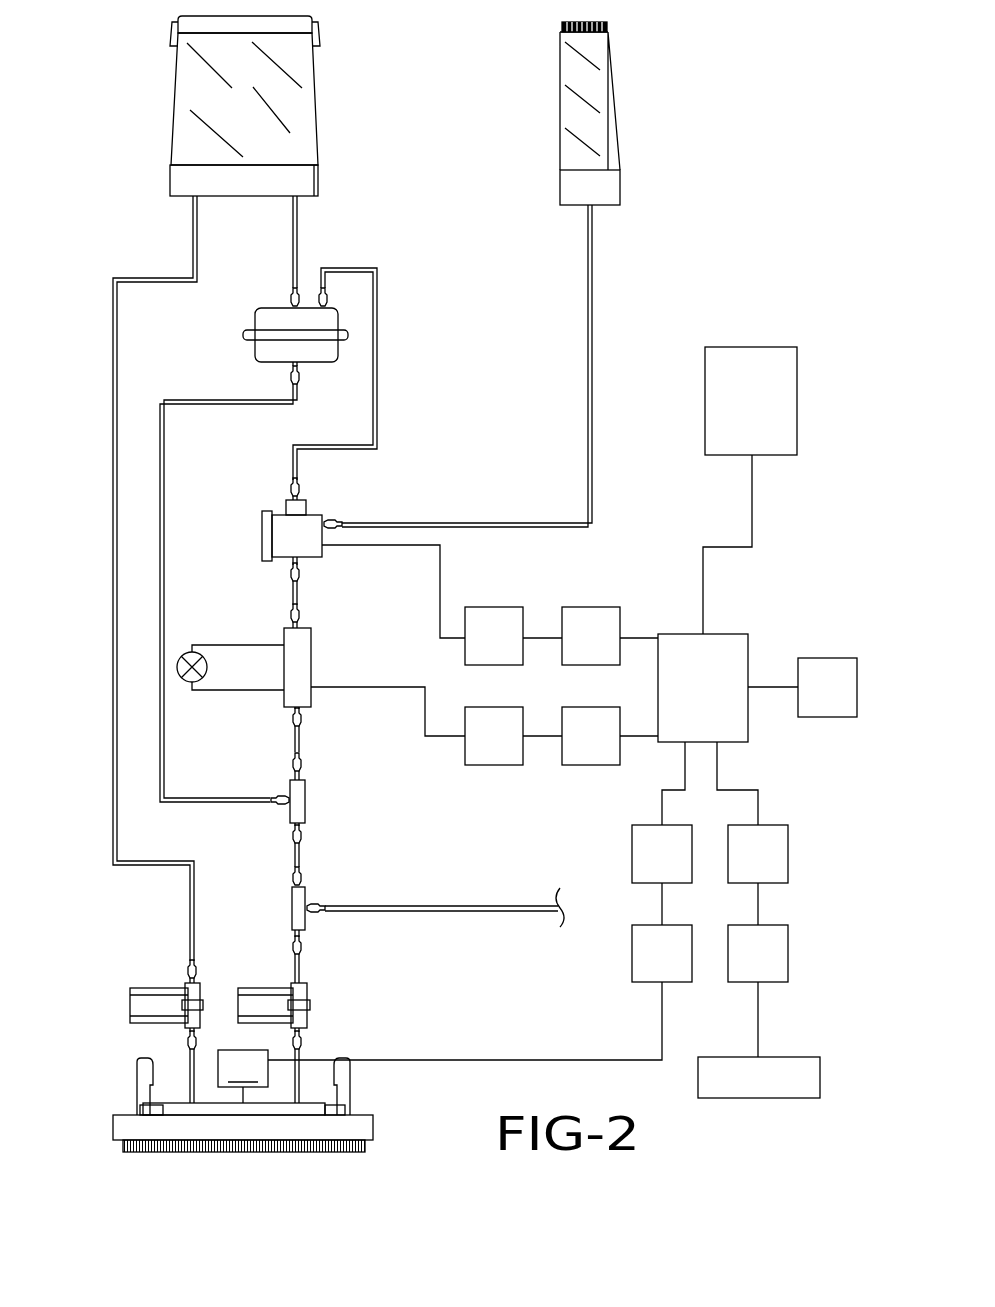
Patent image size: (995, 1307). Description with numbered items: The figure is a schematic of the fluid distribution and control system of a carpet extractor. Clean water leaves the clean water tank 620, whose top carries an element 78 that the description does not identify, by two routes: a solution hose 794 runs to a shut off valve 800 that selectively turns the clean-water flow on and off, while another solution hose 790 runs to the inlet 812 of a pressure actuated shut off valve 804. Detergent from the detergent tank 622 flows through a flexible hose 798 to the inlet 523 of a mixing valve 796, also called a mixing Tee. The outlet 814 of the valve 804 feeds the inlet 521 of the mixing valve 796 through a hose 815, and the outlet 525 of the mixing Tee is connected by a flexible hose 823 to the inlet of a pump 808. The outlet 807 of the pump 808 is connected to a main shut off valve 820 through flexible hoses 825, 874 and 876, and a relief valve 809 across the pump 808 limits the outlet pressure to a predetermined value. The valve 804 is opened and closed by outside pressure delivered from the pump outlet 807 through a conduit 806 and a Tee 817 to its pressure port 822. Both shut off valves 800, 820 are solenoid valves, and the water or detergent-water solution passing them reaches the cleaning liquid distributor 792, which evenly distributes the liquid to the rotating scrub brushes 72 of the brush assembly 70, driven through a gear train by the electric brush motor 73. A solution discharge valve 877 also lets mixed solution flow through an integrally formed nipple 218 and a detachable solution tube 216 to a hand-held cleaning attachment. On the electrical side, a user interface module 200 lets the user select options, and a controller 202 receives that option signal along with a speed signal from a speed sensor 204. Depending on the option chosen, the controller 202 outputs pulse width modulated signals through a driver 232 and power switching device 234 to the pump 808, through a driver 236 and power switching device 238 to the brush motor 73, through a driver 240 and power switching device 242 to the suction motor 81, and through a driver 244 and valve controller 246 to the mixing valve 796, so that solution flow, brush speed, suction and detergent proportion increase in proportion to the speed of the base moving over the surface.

The brush assembly 70 is at (132, 1117).
The scrub brushes 72 is at (353, 1152).
The brush motor 73 is at (243, 1076).
The tank cap 78 is at (193, 25).
The suction motor 81 is at (785, 1067).
The user interface module 200 is at (810, 667).
The controller 202 is at (717, 642).
The speed sensor 204 is at (757, 357).
The detachable solution tube 216 is at (428, 906).
The integrally formed nipple 218 is at (312, 905).
The driver 232 is at (610, 760).
The power switching device 234 is at (520, 762).
The driver 236 is at (648, 860).
The power switching device 238 is at (652, 962).
The driver 240 is at (773, 848).
The power switching device 242 is at (771, 954).
The driver 244 is at (580, 615).
The valve controller 246 is at (475, 615).
The inlet of the mixing valve 521 is at (300, 487).
The inlet of the mixing valve 523 is at (342, 521).
The outlet of the mixing Tee 525 is at (293, 572).
The clean water tank 620 is at (197, 102).
The detergent tank 622 is at (567, 107).
The solution hose 790 is at (293, 228).
The cleaning liquid distributor 792 is at (213, 1103).
The solution hose 794 is at (120, 378).
The mixing valve 796 is at (316, 517).
The flexible hose 798 is at (567, 527).
The shut off valve 800 is at (138, 995).
The pressure actuated shut off valve 804 is at (262, 319).
The conduit 806 is at (165, 515).
The outlet of the pump 807 is at (301, 719).
The pump 808 is at (298, 668).
The relief valve 809 is at (208, 668).
The inlet of the pressure actuated shut off valve 812 is at (290, 305).
The outlet of the pressure actuated shut off valve 814 is at (314, 300).
The hose 815 is at (378, 360).
The Tee 817 is at (305, 800).
The main shut off valve 820 is at (300, 1000).
The pressure port 822 is at (299, 378).
The flexible hose 823 is at (298, 610).
The flexible hose 825 is at (300, 760).
The flexible hose 874 is at (300, 852).
The flexible hose 876 is at (300, 957).
The solution discharge valve 877 is at (292, 908).